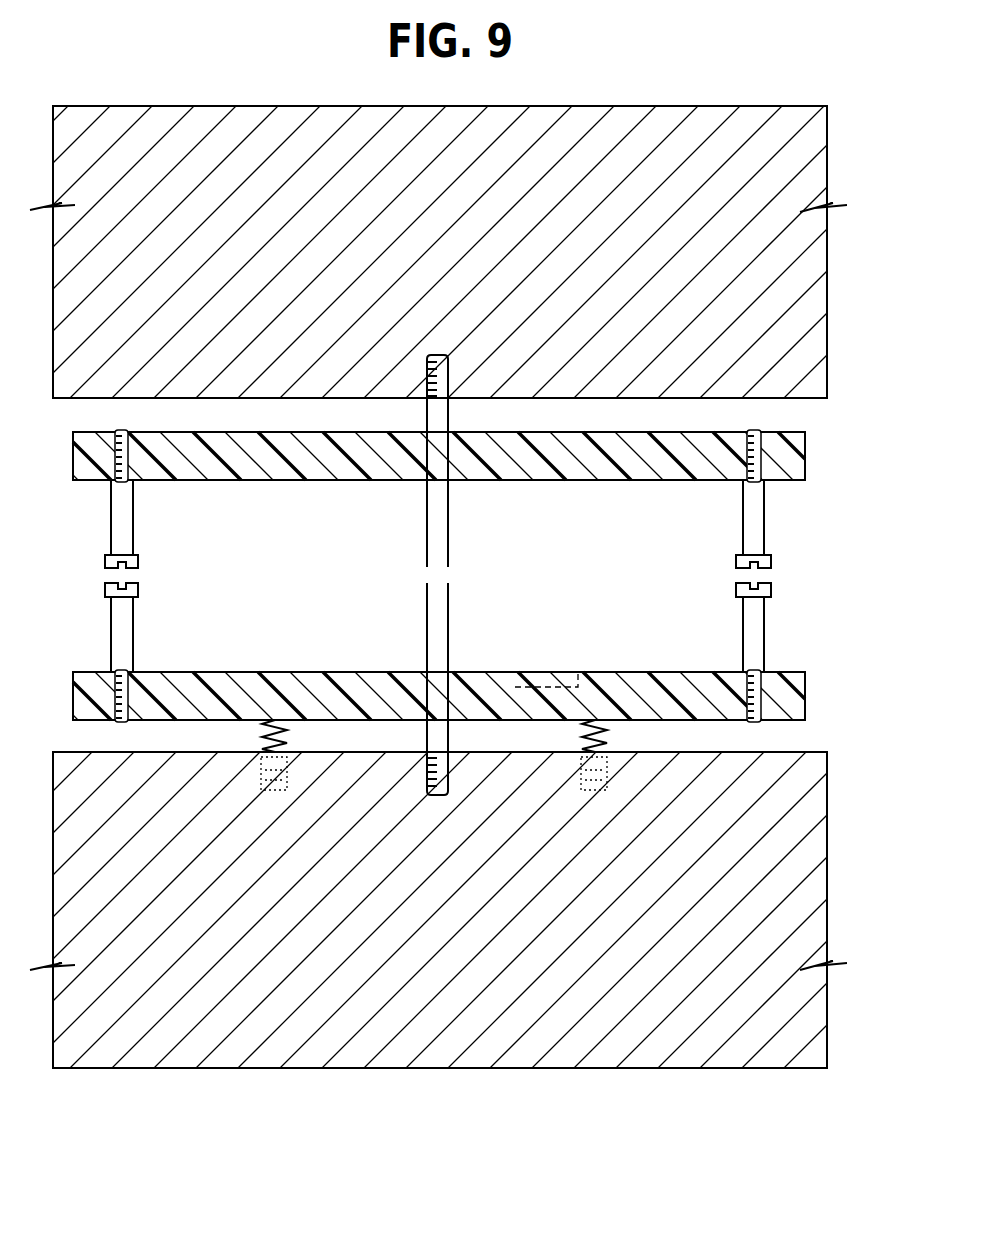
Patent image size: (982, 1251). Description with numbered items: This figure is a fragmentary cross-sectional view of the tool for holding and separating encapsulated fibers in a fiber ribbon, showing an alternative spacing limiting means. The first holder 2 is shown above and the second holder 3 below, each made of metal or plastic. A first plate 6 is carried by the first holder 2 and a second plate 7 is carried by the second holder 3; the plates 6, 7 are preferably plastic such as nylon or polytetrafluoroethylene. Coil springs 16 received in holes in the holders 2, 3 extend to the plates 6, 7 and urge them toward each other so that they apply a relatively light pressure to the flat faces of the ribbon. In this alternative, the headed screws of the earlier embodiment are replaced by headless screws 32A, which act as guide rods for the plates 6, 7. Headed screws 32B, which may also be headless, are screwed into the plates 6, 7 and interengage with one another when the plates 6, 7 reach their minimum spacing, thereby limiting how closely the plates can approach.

The first holder 2 is at (827, 352).
The second holder 3 is at (827, 905).
The first plate 6 is at (805, 468).
The second plate 7 is at (805, 703).
The coil springs 16 is at (262, 742).
The headless screws 32A is at (450, 382).
The headed screws 32B is at (771, 558).